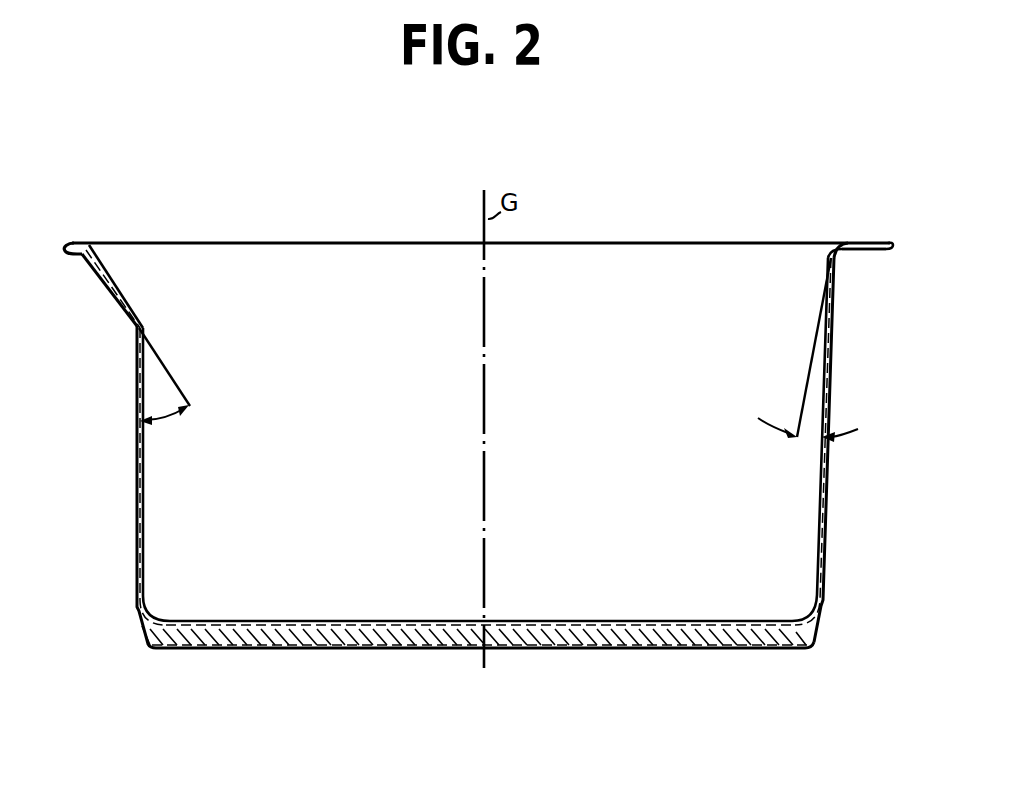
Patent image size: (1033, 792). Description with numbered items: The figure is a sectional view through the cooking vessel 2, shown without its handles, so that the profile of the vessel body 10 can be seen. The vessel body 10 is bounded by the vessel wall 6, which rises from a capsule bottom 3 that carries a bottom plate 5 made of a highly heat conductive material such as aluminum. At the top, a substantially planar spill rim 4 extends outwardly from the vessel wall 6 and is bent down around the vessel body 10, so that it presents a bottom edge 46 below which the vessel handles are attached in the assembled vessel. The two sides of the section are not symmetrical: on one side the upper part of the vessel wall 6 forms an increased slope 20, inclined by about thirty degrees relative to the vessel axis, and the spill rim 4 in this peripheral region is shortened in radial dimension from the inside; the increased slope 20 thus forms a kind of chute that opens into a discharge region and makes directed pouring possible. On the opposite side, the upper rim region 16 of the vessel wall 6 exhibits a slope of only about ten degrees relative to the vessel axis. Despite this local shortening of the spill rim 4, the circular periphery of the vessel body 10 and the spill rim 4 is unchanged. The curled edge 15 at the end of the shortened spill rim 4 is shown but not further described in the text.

The cooking vessel 2 is at (807, 168).
The capsule bottom 3 is at (362, 650).
The spill rim 4 is at (862, 242).
The bottom plate 5 is at (421, 626).
The vessel wall 6 is at (830, 408).
The vessel body 10 is at (134, 437).
The curled rim edge 15 is at (120, 258).
The upper rim region 16 is at (808, 285).
The increased slope 20 is at (121, 285).
The bottom edge of spill rim 46 is at (874, 251).